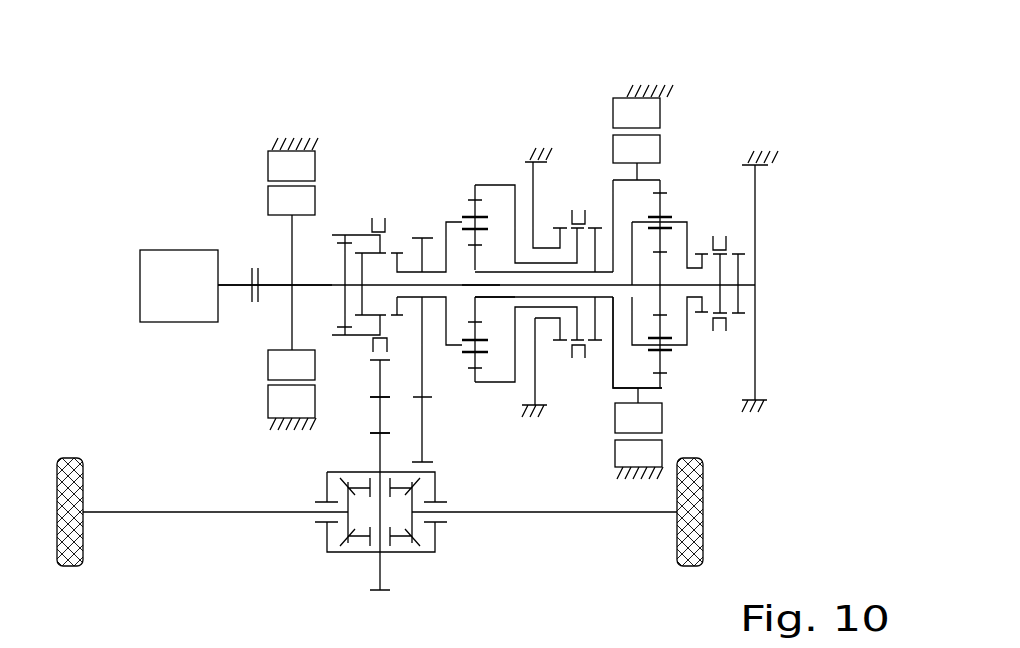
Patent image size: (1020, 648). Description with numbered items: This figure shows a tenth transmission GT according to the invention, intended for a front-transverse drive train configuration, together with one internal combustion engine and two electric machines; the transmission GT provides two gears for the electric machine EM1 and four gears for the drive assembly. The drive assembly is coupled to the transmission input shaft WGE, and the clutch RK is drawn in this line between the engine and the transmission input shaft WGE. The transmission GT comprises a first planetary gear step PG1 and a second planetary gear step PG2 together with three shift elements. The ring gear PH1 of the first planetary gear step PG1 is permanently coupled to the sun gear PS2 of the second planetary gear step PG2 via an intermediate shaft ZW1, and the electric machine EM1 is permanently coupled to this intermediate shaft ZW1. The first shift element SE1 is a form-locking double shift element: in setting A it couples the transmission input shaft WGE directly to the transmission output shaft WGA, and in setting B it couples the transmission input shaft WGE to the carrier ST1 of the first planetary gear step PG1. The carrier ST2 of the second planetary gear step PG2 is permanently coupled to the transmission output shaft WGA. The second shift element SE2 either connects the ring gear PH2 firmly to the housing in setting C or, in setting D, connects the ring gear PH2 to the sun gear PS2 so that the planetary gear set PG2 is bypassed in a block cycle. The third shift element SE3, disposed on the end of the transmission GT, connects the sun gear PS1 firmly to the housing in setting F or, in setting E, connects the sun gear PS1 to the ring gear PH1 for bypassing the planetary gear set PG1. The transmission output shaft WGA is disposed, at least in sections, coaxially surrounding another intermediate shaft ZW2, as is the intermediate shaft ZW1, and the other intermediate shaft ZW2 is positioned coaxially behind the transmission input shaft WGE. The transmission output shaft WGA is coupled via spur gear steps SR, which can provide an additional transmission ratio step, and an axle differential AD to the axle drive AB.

The clutch RK is at (250, 266).
The first shift element SE1 is at (375, 188).
The transmission output shaft WGA is at (440, 270).
The second planetary gear step PG2 is at (472, 179).
The sun gear of the second planetary gear step PS2 is at (482, 270).
The second shift element SE2 is at (577, 184).
The electric machine EM1 is at (638, 86).
The first planetary gear step PG1 is at (668, 178).
The third shift element SE3 is at (718, 208).
The sun gear of the first planetary gear step PS1 is at (707, 278).
The carrier of the first planetary gear step ST1 is at (700, 345).
The ring gear of the first planetary gear step PH1 is at (662, 388).
The transmission GT is at (692, 418).
The axle drive AB is at (703, 528).
The transmission input shaft WGE is at (277, 287).
The spur gear steps SR is at (363, 420).
The axle differential AD is at (350, 552).
The other intermediate shaft ZW2 is at (463, 290).
The carrier of the second planetary gear step ST2 is at (490, 297).
The ring gear of the second planetary gear step PH2 is at (513, 383).
The intermediate shaft ZW1 is at (607, 290).